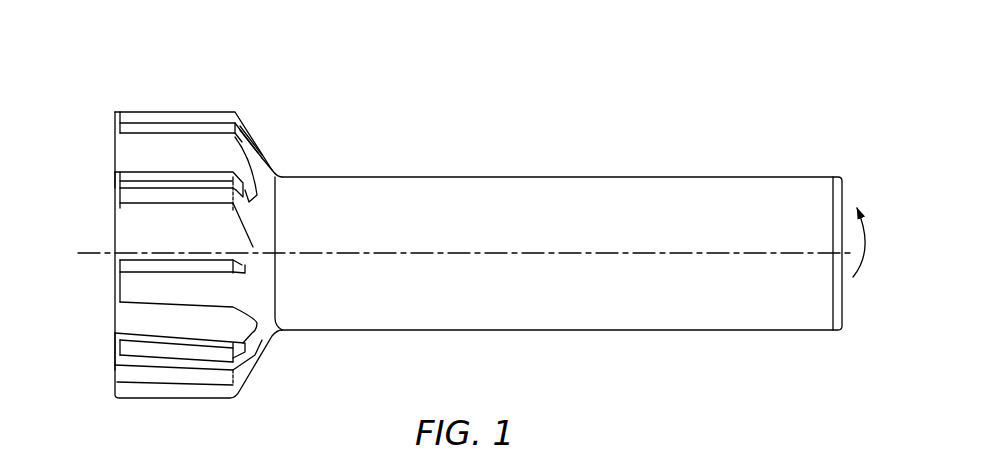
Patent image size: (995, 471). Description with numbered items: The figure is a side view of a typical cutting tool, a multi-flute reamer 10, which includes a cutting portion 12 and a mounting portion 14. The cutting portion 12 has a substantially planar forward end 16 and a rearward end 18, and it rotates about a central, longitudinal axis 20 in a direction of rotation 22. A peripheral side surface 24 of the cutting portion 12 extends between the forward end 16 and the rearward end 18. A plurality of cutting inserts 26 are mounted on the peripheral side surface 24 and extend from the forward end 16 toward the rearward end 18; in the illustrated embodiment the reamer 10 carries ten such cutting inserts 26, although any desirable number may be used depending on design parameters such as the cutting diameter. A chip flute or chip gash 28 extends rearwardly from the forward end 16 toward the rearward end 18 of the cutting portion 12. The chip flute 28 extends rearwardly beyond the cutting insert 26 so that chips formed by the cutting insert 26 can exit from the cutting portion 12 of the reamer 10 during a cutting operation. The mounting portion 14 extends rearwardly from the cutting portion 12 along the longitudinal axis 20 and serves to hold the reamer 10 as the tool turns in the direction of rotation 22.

The multi-flute reamer 10 is at (735, 87).
The cutting portion 12 is at (200, 85).
The mounting portion 14 is at (608, 176).
The forward end 16 is at (108, 205).
The rearward end 18 is at (282, 163).
The longitudinal axis 20 is at (90, 256).
The direction of rotation 22 is at (855, 284).
The peripheral side surface 24 is at (265, 163).
The cutting inserts 26 is at (108, 178).
The chip flute 28 is at (150, 157).